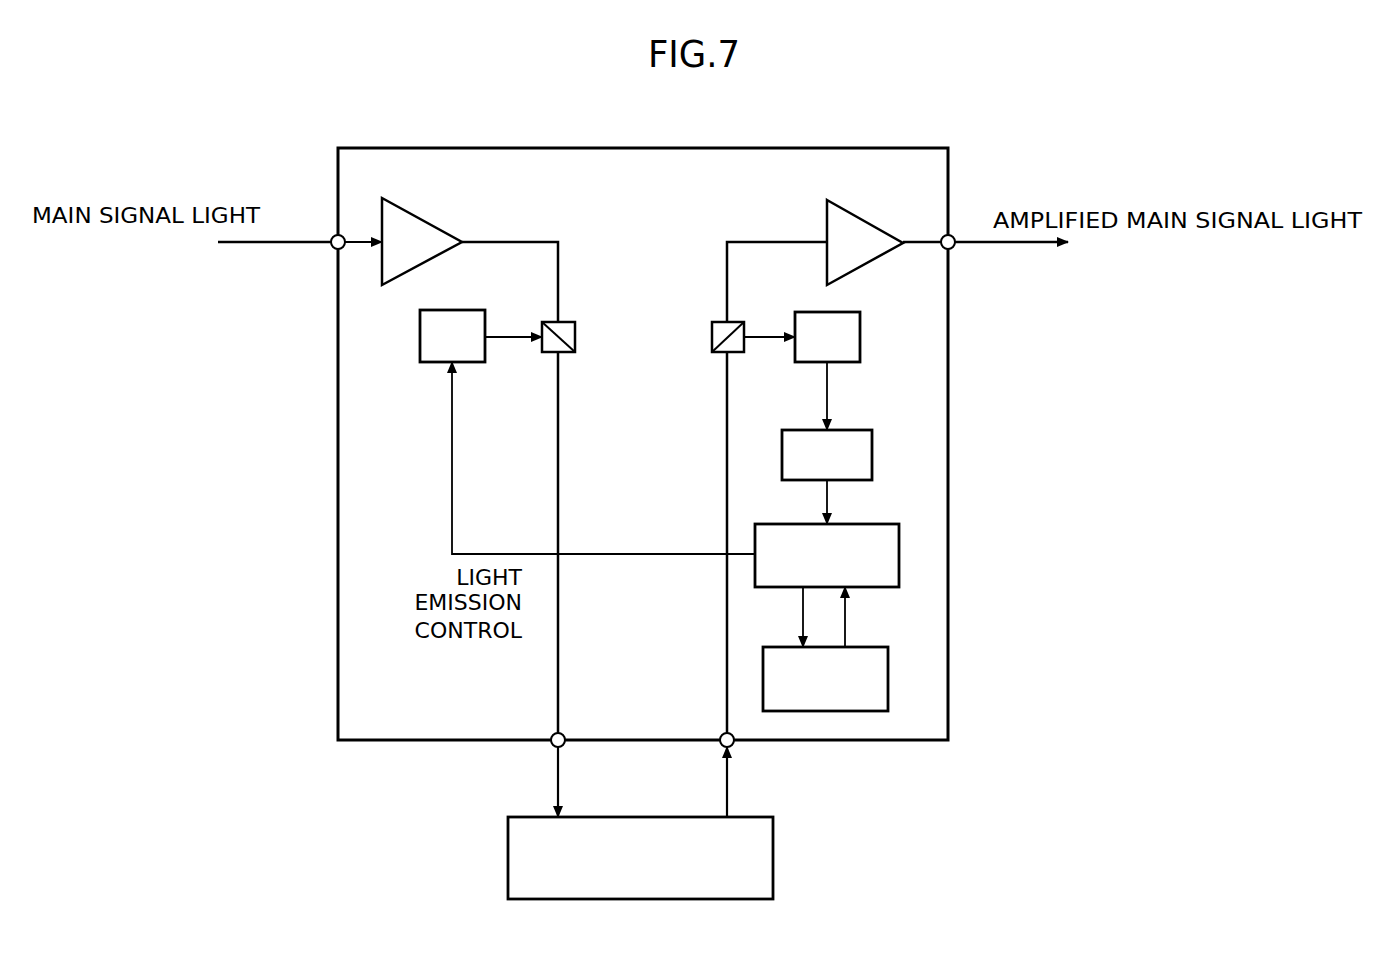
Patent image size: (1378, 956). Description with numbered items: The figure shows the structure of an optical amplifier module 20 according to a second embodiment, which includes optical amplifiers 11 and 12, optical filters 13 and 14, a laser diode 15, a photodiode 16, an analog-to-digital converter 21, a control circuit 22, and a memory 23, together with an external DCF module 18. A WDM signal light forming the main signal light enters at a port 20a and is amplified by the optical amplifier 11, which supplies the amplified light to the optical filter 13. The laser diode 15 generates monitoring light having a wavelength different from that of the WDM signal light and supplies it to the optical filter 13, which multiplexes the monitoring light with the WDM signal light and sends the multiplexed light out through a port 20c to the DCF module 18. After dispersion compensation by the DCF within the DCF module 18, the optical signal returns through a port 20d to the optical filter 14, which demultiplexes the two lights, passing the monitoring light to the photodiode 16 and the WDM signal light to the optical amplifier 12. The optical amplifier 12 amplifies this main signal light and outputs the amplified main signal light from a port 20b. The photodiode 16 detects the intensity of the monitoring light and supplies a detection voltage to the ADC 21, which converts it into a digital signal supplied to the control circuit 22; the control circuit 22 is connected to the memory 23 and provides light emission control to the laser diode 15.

The optical amplifier module 20 is at (833, 148).
The port 20a is at (336, 236).
The port 20b is at (950, 235).
The port 20c is at (553, 748).
The port 20d is at (733, 748).
The optical amplifier 11 is at (416, 217).
The optical amplifier 12 is at (864, 219).
The optical filter 13 is at (572, 322).
The optical filter 14 is at (712, 324).
The laser diode 15 is at (432, 310).
The photodiode 16 is at (845, 312).
The DCF module 18 is at (775, 858).
The analog-to-digital converter (ADC) 21 is at (846, 430).
The control circuit 22 is at (846, 524).
The memory 23 is at (860, 647).